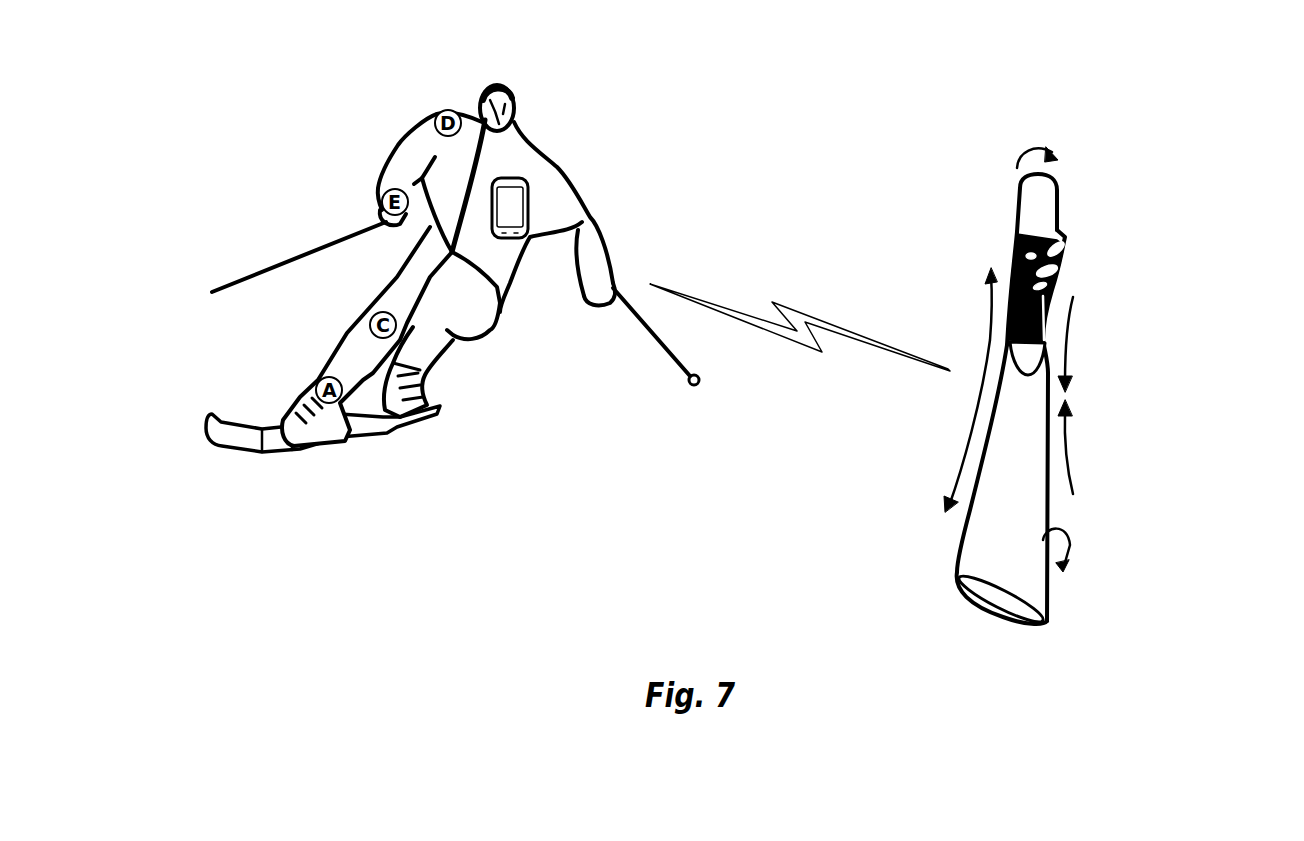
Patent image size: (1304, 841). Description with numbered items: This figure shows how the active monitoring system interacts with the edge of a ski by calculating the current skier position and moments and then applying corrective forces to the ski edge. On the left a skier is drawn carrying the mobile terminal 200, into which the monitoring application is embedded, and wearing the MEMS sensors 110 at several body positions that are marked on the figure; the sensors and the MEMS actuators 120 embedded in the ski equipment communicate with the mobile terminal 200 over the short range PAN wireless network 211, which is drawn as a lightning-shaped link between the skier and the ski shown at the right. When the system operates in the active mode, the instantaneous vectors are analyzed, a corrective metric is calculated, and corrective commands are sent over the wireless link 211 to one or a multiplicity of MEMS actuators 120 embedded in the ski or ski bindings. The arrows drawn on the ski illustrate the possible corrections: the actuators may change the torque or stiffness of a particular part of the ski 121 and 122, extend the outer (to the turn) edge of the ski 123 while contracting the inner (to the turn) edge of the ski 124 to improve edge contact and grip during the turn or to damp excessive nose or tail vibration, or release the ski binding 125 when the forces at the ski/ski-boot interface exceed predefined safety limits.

The MEMS sensors 110 is at (363, 327).
The MEMS actuators 120 is at (380, 443).
The mobile terminal 200 is at (527, 191).
The short range PAN wireless network 211 is at (923, 360).
The part of the ski with changeable torque 121 is at (1070, 545).
The part of the ski with changeable torque 122 is at (1030, 145).
The outer edge of the ski 123 is at (985, 347).
The inner edge of the ski 124 is at (1073, 453).
The ski binding 125 is at (1043, 353).